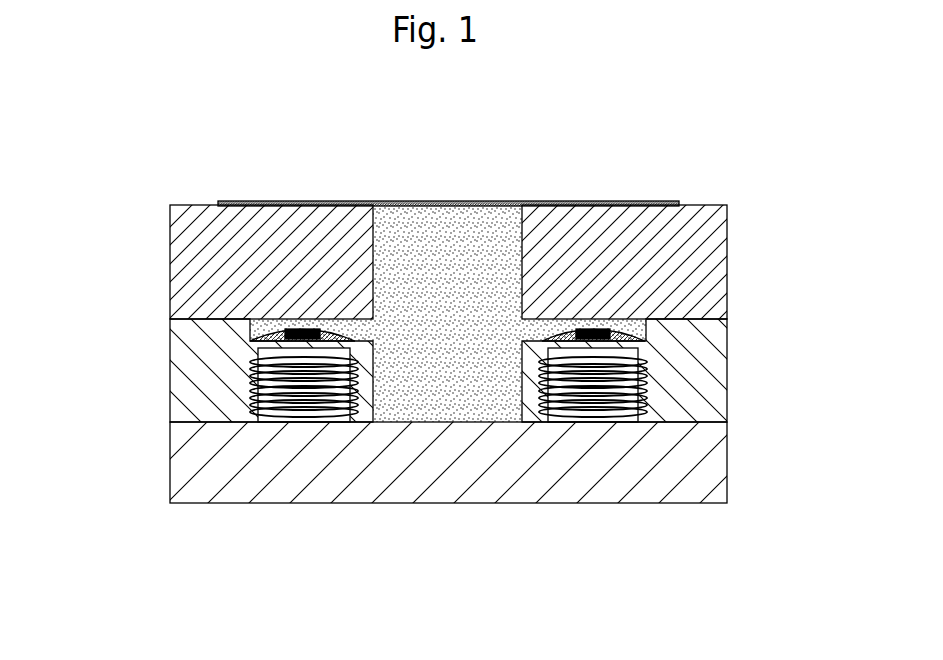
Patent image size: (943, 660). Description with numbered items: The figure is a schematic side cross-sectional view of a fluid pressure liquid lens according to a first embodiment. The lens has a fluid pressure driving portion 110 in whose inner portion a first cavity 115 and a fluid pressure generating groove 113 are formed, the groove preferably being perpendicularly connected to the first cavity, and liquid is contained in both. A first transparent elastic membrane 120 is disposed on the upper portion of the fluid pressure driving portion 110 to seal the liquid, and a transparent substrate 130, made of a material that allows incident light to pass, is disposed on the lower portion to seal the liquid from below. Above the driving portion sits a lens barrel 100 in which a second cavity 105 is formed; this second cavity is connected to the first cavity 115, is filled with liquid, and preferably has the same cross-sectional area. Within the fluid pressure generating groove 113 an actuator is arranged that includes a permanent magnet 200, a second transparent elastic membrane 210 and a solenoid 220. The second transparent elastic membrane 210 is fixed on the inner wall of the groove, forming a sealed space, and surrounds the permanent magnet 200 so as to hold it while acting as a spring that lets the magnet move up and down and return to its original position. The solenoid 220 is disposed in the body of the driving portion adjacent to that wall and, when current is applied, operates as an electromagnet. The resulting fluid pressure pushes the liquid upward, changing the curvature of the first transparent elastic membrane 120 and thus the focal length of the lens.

The lens barrel 100 is at (208, 242).
The second cavity 105 is at (433, 252).
The fluid pressure driving portion 110 is at (203, 378).
The fluid pressure generating groove 113 is at (306, 322).
The first cavity 115 is at (428, 380).
The first transparent elastic membrane 120 is at (620, 201).
The transparent substrate 130 is at (288, 477).
The permanent magnet 200 is at (625, 313).
The second transparent elastic membrane 210 is at (568, 330).
The solenoid 220 is at (593, 397).